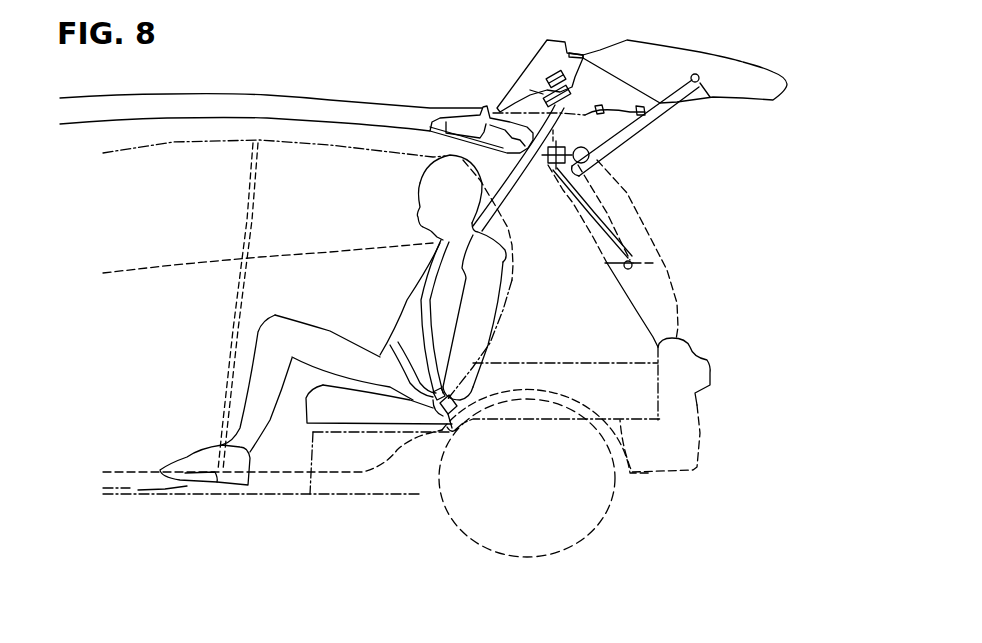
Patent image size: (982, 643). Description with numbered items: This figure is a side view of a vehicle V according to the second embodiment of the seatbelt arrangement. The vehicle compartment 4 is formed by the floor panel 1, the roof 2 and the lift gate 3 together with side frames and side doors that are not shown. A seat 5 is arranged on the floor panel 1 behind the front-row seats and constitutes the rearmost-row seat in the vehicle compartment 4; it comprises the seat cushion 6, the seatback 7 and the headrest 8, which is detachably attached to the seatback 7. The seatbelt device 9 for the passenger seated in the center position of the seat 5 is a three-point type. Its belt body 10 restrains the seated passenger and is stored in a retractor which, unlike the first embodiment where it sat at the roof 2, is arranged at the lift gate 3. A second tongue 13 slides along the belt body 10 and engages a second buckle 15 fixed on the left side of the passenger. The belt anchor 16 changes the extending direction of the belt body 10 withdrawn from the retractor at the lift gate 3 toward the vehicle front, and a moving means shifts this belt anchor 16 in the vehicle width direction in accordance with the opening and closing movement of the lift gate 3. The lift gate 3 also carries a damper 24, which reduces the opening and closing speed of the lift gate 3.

The vehicle V is at (274, 73).
The floor panel 1 is at (133, 489).
The roof 2 is at (375, 101).
The lift gate 3 is at (650, 40).
The vehicle compartment 4 is at (197, 323).
The seat 5 is at (524, 294).
The seat cushion 6 is at (312, 407).
The seatback 7 is at (483, 327).
The headrest 8 is at (507, 257).
The seatbelt device 9 is at (587, 88).
The belt body 10 is at (422, 282).
The second tongue 13 is at (430, 403).
The second buckle 15 is at (452, 430).
The belt anchor 16 is at (578, 75).
The damper 24 is at (625, 128).